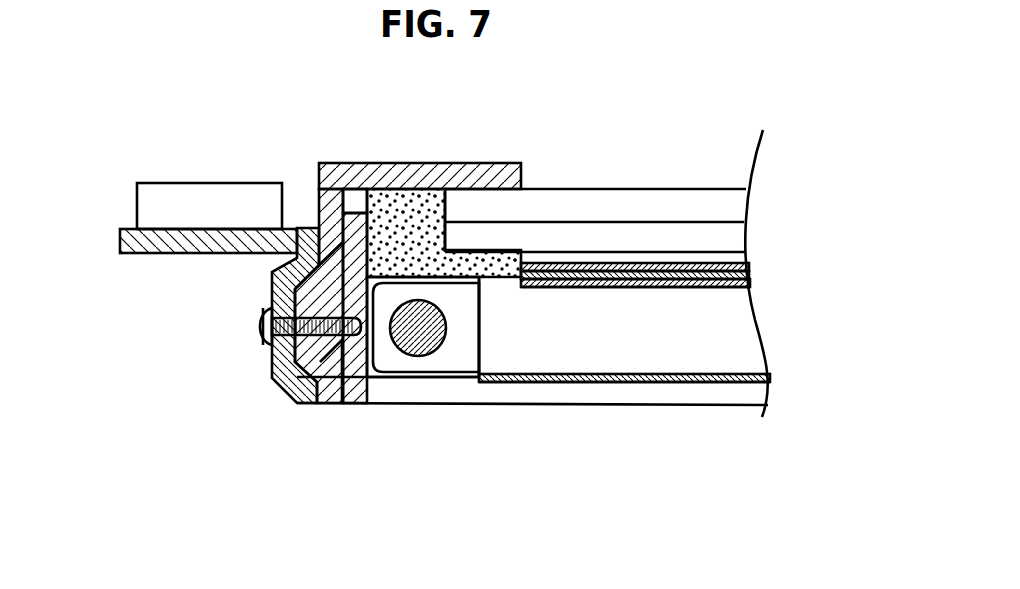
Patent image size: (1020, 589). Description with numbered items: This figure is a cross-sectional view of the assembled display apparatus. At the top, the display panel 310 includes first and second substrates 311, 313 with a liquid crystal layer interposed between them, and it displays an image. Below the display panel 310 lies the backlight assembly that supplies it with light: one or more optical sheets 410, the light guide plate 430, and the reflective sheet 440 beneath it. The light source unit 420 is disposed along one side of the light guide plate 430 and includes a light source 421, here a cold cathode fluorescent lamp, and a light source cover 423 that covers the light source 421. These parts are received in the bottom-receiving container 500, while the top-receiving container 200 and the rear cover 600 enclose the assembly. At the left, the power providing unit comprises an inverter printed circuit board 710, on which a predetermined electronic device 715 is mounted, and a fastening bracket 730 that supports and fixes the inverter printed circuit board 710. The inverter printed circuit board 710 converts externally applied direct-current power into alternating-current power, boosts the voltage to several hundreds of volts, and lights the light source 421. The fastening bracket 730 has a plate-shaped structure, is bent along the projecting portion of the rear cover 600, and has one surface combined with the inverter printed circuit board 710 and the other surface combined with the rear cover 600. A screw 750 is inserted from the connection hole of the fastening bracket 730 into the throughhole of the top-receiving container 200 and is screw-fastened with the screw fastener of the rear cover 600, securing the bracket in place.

The frame 200 is at (463, 168).
The display panel 310 is at (606, 246).
The first substrate 311 is at (597, 232).
The second substrate 313 is at (638, 205).
The optical sheets 410 is at (757, 263).
The light source unit 420 is at (450, 417).
The light source 421 is at (437, 378).
The light source cover 423 is at (437, 335).
The light guide plate 430 is at (758, 330).
The reflective sheet 440 is at (770, 380).
The bottom-receiving container 500 is at (402, 198).
The bottom chassis 600 is at (628, 395).
The inverter printed circuit board 710 is at (120, 234).
The electronic device 715 is at (193, 193).
The fastening bracket 730 is at (300, 404).
The screw 750 is at (258, 323).